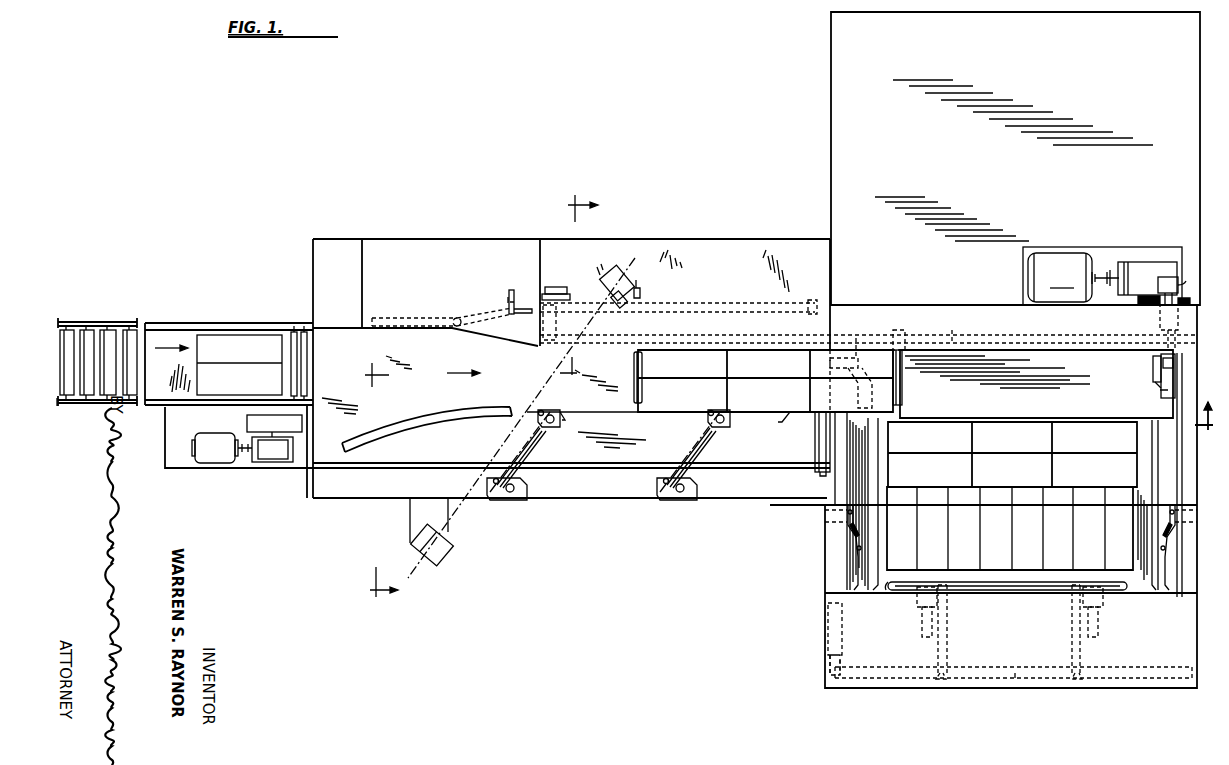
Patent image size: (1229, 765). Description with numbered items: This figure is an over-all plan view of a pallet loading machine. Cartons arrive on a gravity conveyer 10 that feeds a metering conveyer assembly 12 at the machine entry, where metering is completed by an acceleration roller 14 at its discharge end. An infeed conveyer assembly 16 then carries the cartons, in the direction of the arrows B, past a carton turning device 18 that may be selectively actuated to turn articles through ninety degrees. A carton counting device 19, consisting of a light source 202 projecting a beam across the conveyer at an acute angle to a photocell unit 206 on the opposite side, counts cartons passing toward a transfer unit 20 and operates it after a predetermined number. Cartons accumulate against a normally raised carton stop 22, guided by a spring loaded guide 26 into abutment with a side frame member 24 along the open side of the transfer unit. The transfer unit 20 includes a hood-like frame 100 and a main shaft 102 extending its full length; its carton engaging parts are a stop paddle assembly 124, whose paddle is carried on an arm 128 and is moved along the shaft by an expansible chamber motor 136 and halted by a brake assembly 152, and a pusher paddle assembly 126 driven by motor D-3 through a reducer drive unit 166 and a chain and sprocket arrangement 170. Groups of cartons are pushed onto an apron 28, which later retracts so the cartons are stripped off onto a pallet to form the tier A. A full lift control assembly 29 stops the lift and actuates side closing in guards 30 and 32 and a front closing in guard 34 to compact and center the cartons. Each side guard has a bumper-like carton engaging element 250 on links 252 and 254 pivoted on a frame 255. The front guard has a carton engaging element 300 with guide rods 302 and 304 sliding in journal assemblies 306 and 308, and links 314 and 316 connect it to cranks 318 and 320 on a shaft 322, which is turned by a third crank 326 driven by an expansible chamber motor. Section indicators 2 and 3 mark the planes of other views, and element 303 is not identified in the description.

The section line 2- 2 is at (638, 421).
The section line 3- 3 is at (489, 398).
The gravity conveyer 10 is at (98, 326).
The metering conveyer assembly 12 is at (213, 333).
The acceleration roller 14 is at (298, 333).
The infeed conveyer assembly 16 is at (568, 369).
The carton turning device 18 is at (461, 314).
The carton counting device 19 is at (545, 376).
The transfer unit 20 is at (723, 300).
The carton stop 22 is at (817, 448).
The side frame member 24 is at (550, 340).
The spring loaded guide 26 is at (511, 406).
The apron 28 is at (1036, 384).
The full lift control assembly 29 is at (1183, 380).
The side closing in guard 30 is at (871, 470).
The side closing in guard 32 is at (1148, 446).
The front closing in guard 34 is at (1060, 594).
The hood-like frame 100 is at (900, 305).
The main shaft 102 is at (955, 327).
The stop paddle assembly 124 is at (898, 394).
The pusher paddle assembly 126 is at (627, 368).
The arm 128 is at (901, 346).
The expansible chamber motor 136 is at (514, 305).
The brake assembly 152 is at (557, 295).
The reducer drive unit 166 is at (1158, 282).
The chain and sprocket arrangement 170 is at (1150, 305).
The light source 202 is at (607, 276).
The photocell unit 206 is at (439, 548).
The carton engaging element 250 is at (873, 492).
The link 252 is at (862, 340).
The link 254 is at (848, 520).
The frame 255 is at (825, 577).
The carton engaging element 300 is at (905, 590).
The guide rod 302 is at (927, 635).
The cylinder 303 is at (828, 635).
The guide rod 304 is at (1102, 635).
The journal assembly 306 is at (919, 608).
The journal assembly 308 is at (1102, 603).
The link 314 is at (947, 653).
The link 316 is at (1072, 650).
The crank 318 is at (940, 678).
The crank 320 is at (1080, 680).
The shaft 322 is at (1015, 680).
The third crank 326 is at (842, 682).